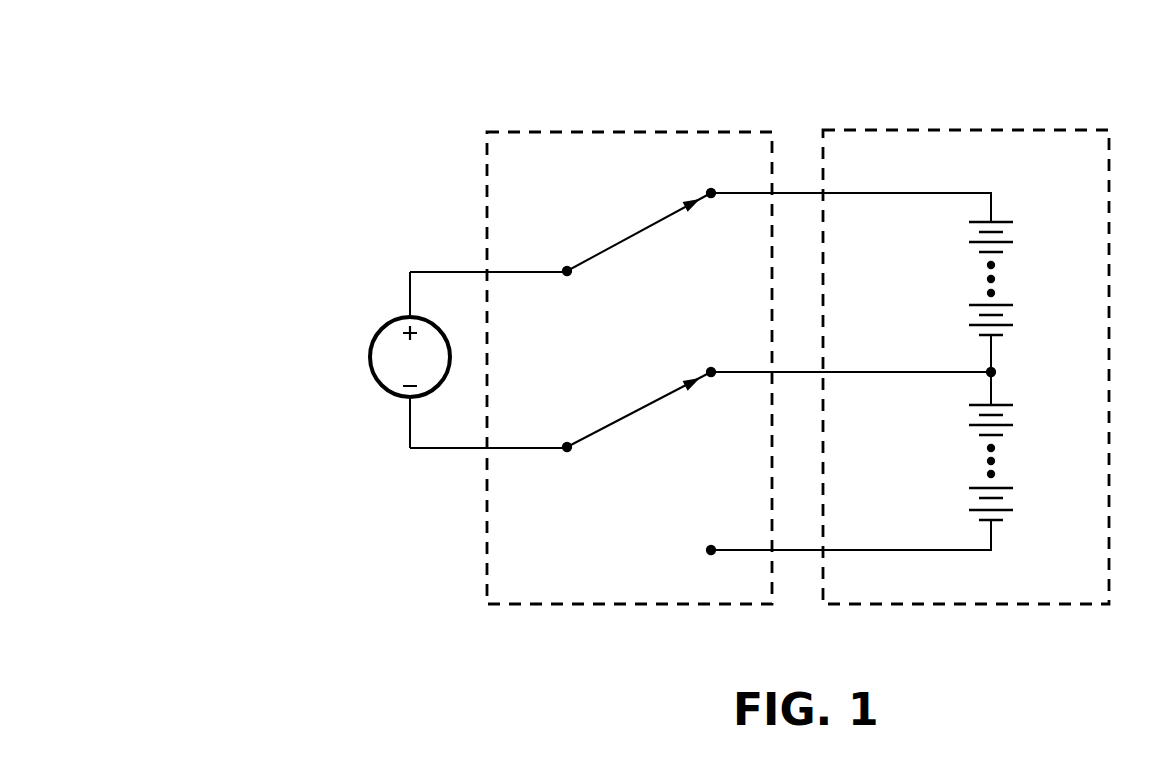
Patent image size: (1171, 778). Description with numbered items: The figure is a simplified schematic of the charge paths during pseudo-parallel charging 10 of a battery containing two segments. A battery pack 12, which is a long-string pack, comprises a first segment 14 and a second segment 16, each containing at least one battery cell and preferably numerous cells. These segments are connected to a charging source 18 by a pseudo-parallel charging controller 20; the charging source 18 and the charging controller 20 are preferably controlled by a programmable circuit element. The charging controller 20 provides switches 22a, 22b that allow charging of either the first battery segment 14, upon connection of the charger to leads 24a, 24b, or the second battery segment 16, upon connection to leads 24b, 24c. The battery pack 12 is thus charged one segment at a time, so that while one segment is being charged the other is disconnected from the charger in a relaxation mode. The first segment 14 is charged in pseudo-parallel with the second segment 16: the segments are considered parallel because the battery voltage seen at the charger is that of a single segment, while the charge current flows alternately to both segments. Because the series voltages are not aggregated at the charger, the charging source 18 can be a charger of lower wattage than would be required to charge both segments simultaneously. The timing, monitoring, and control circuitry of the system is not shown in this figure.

The pseudo-parallel charging 10 is at (352, 70).
The battery pack 12 is at (1068, 125).
The first segment 14 is at (1005, 218).
The second segment 16 is at (1003, 403).
The charging source 18 is at (383, 392).
The pseudo-parallel charging controller 20 is at (672, 128).
The switch 22a is at (645, 230).
The switch 22b is at (648, 405).
The lead 24a is at (950, 195).
The lead 24b is at (947, 370).
The lead 24c is at (953, 548).